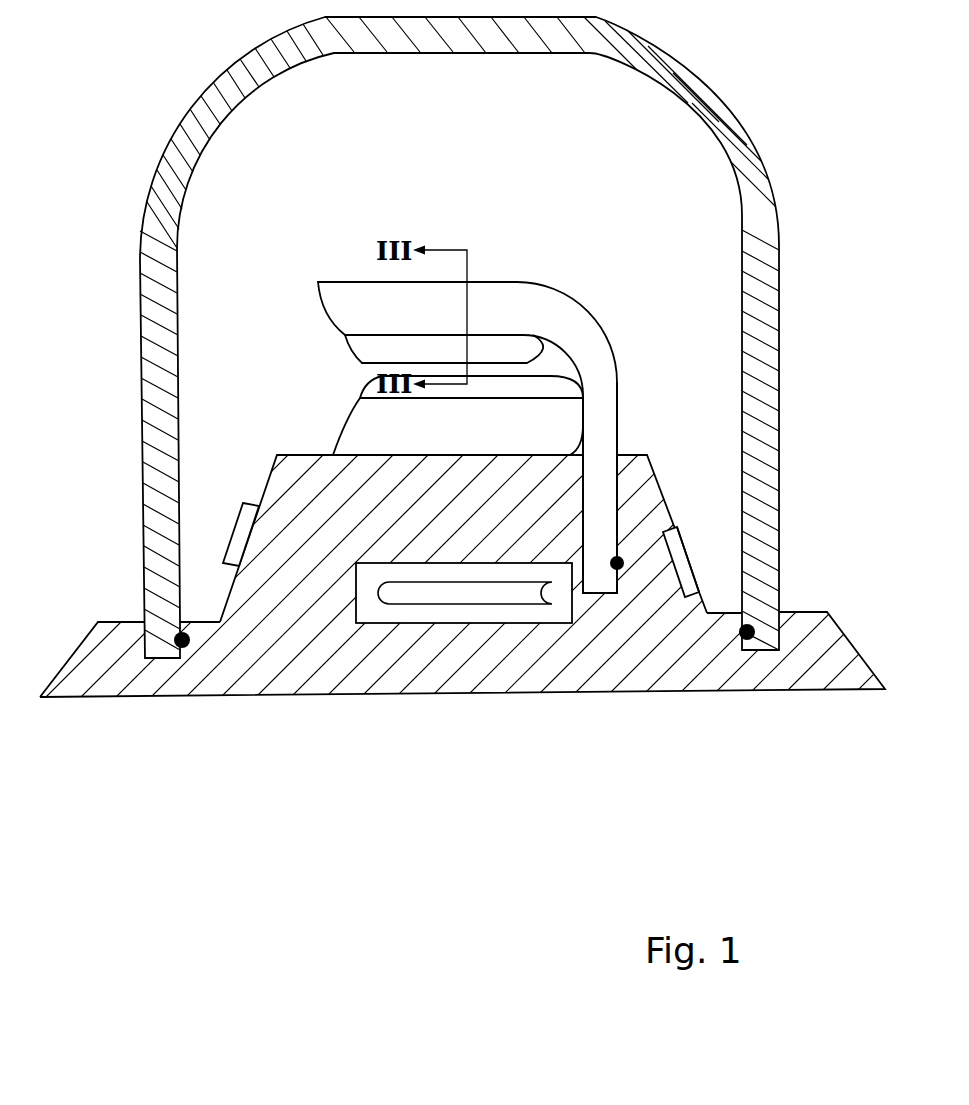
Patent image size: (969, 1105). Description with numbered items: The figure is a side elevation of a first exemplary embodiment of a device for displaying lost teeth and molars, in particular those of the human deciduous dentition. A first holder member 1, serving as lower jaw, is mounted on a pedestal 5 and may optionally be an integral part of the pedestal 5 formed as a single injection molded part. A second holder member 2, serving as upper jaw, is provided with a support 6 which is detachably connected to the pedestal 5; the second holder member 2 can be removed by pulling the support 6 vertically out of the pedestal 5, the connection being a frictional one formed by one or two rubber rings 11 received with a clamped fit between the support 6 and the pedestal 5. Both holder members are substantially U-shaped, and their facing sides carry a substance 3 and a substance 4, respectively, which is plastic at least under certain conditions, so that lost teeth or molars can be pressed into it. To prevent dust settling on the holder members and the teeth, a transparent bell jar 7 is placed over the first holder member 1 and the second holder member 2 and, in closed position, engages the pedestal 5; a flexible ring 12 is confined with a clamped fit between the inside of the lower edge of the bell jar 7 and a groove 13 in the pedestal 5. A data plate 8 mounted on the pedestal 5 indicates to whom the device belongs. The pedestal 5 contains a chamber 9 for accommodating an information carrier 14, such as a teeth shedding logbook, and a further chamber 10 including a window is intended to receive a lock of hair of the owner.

The first holder member 1 is at (502, 438).
The second holder member 2 is at (505, 302).
The substance 3 is at (501, 394).
The substance 4 is at (501, 358).
The pedestal 5 is at (630, 485).
The support 6 is at (606, 428).
The bell jar 7 is at (680, 92).
The data plate 8 is at (238, 522).
The chamber 9 is at (447, 625).
The chamber 10 is at (677, 562).
The rubber ring 11 is at (630, 547).
The flexible ring 12 is at (738, 634).
The groove 13 is at (763, 653).
The information carrier 14 is at (408, 593).